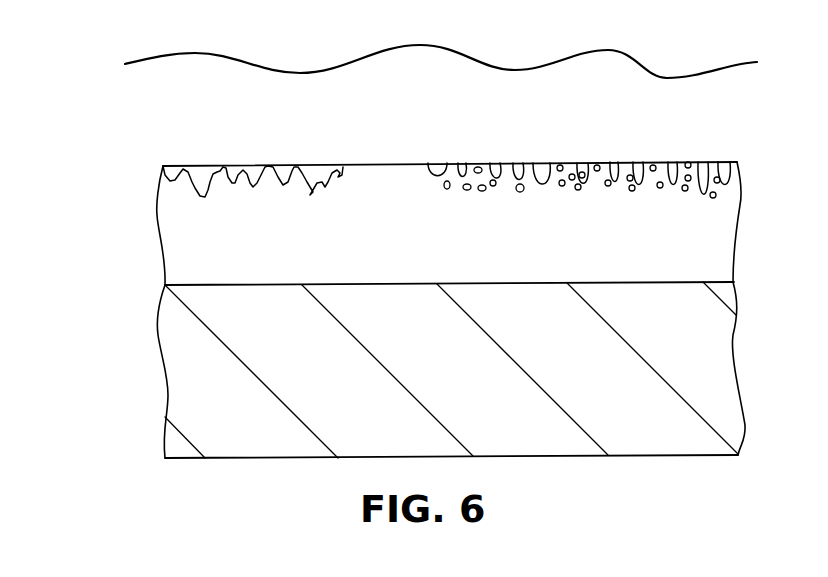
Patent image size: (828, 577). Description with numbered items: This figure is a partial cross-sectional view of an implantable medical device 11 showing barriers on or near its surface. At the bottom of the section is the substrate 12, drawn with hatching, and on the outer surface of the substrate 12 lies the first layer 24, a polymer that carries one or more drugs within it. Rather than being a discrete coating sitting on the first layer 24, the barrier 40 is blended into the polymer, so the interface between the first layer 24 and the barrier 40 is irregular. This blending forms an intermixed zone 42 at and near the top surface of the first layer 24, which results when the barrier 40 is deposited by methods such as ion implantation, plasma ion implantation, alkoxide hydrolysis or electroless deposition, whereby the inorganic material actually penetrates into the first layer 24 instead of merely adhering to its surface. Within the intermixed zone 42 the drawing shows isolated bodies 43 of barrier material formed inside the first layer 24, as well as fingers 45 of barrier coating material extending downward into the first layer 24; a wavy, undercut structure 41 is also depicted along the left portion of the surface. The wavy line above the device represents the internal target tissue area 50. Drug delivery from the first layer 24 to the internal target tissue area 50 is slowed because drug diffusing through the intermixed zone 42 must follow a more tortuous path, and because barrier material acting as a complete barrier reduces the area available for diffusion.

The internal target tissue area 50 is at (145, 58).
The medical device 11 is at (84, 171).
The intermixed zone 42 is at (163, 167).
The first layer 24 is at (160, 235).
The undercut structures 41 is at (310, 194).
The barrier 40 is at (692, 162).
The isolated bodies 43 is at (447, 191).
The fingers 45 is at (547, 184).
The substrate 12 is at (167, 405).